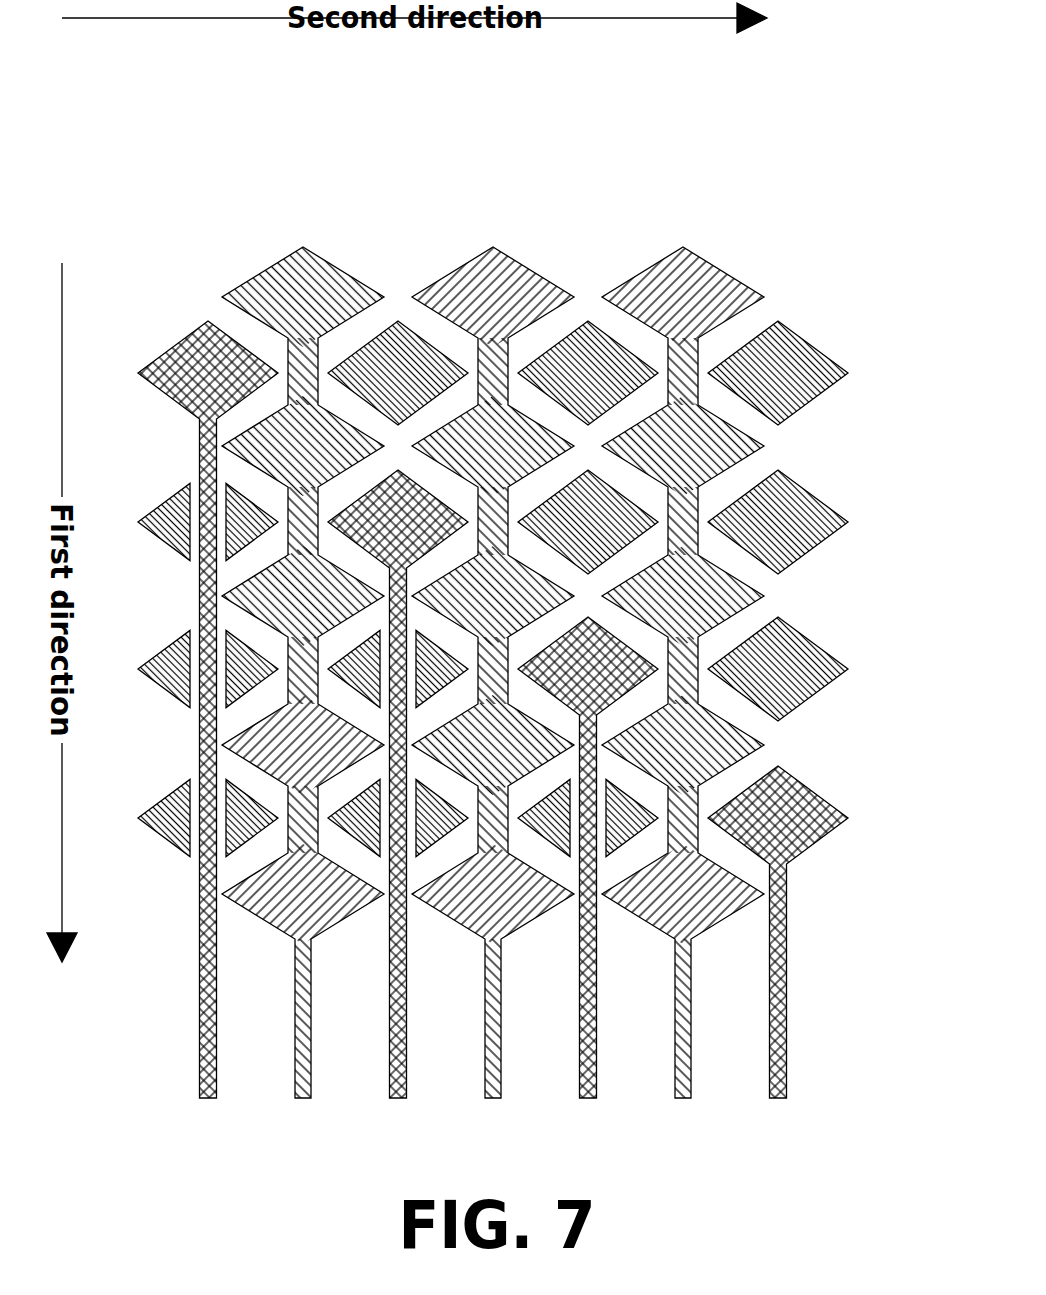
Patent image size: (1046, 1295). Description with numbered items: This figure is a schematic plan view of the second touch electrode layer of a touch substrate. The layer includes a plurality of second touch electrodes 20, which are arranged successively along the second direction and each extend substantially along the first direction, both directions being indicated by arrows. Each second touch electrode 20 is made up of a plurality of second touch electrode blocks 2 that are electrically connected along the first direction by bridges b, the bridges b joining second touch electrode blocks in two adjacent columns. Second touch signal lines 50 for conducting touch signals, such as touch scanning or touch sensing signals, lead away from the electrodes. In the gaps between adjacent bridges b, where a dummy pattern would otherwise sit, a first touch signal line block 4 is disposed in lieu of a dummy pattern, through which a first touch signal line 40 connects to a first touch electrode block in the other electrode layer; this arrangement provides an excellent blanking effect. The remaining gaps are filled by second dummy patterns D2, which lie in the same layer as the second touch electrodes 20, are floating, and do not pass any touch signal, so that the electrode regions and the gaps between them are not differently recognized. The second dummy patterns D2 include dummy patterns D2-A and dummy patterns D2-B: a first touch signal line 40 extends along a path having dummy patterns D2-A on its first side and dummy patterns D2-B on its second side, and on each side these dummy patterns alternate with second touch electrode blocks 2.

The second touch electrode 20 is at (683, 586).
The second touch electrode block 2 is at (683, 297).
The second dummy pattern D2 is at (778, 373).
The first touch signal line block 4 is at (398, 784).
The bridge b is at (293, 513).
The dummy pattern D2-A is at (227, 648).
The dummy pattern D2-B is at (178, 675).
The first touch signal line 40 is at (202, 1045).
The second touch signal line 50 is at (245, 672).